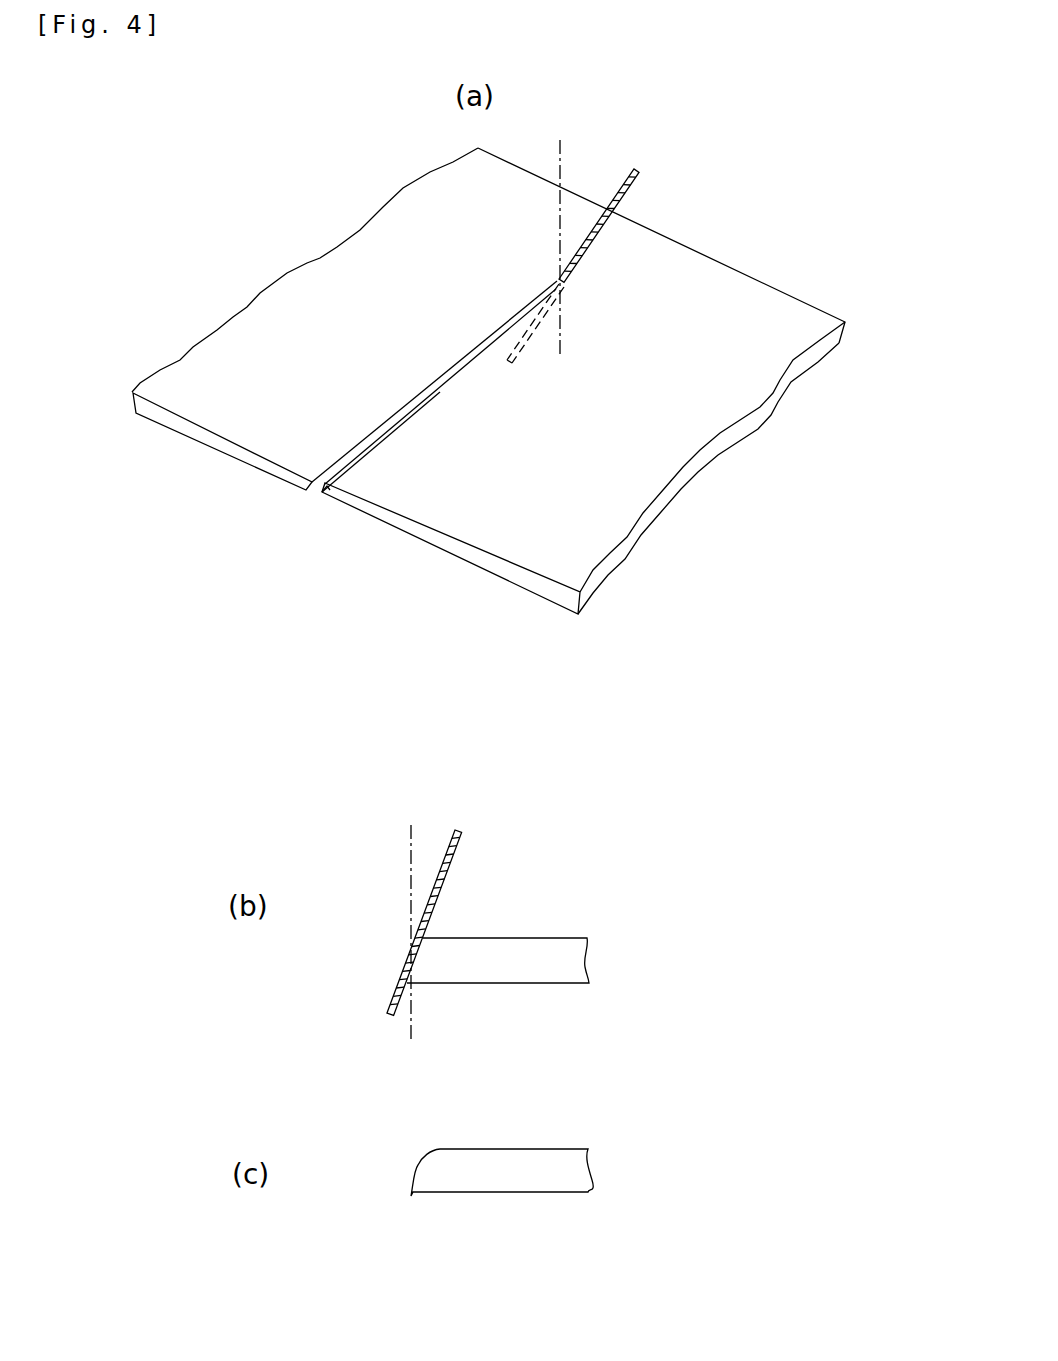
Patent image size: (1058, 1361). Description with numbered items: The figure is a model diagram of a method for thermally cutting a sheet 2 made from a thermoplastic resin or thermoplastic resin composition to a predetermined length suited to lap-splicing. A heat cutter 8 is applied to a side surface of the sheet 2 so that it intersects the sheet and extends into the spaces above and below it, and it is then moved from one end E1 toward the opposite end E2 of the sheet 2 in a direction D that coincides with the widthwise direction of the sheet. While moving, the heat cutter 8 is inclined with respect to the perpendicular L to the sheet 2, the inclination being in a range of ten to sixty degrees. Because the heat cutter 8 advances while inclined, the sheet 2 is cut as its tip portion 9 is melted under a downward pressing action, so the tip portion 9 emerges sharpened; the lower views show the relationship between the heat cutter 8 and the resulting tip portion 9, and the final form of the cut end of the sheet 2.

The sheet 2 is at (433, 542).
The heat cutter 8 is at (631, 189).
The tip portion 9 is at (327, 494).
The one end E1 is at (208, 437).
The opposite end E2 is at (742, 270).
The perpendicular L is at (557, 243).
The direction D is at (587, 282).